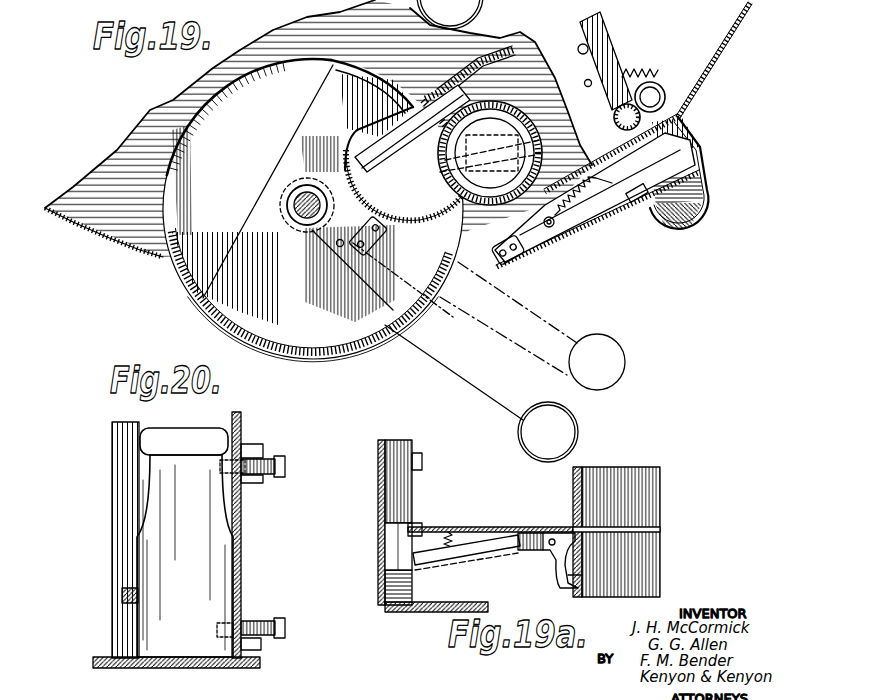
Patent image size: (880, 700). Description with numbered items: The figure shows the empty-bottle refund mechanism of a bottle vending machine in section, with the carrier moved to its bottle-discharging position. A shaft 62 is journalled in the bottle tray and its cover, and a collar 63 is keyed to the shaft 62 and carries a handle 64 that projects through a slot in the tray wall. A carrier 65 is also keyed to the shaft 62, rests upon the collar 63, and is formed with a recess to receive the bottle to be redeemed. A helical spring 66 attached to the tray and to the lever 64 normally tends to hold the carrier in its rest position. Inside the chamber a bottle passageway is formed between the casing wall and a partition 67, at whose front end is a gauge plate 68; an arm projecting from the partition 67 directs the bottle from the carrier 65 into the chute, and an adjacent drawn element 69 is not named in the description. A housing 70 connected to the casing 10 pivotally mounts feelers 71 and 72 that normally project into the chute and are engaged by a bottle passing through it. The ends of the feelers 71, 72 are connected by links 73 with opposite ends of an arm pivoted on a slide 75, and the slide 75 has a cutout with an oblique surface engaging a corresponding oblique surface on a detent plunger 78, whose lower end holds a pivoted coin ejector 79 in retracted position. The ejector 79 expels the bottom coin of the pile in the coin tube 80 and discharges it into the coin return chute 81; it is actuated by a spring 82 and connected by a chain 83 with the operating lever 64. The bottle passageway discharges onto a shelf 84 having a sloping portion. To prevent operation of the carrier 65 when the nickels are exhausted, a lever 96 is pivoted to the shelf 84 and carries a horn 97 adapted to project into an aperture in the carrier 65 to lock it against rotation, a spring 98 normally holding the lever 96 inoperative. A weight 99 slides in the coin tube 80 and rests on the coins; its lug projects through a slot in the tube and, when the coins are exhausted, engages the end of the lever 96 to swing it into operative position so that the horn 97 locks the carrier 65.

In FIG. 19, the casing 10 is at (737, 33).
In FIG. 19, the shaft 62 is at (285, 182).
In FIG. 19, the collar 63 is at (352, 246).
In FIG. 19, the handle 64 is at (480, 373).
In FIG. 19, the carrier 65 is at (352, 104).
In FIG. 19A, the carrier 65 is at (623, 483).
In FIG. 19, the helical spring 66 is at (287, 210).
In FIG. 19, the partition 67 is at (500, 43).
In FIG. 19, the gauge plate 68 is at (433, 100).
In FIG. 20, the gauge plate 68 is at (128, 490).
In FIG. 19, the stop bar 69 is at (393, 145).
In FIG. 20, the stop bar 69 is at (122, 590).
In FIG. 19, the housing 70 is at (570, 230).
In FIG. 19, the feeler 71 is at (530, 223).
In FIG. 20, the feeler 71 is at (262, 472).
In FIG. 20, the feeler 72 is at (258, 625).
In FIG. 19, the links 73 is at (547, 240).
In FIG. 20, the links 73 is at (285, 468).
In FIG. 19, the slide 75 is at (593, 203).
In FIG. 19, the detent plunger 78 is at (637, 196).
In FIG. 19, the coin ejector 79 is at (697, 138).
In FIG. 19A, the coin ejector 79 is at (452, 603).
In FIG. 19, the coin tube 80 is at (667, 107).
In FIG. 19A, the coin tube 80 is at (382, 500).
In FIG. 19, the coin return chute 81 is at (707, 190).
In FIG. 19, the spring 82 is at (622, 103).
In FIG. 19, the chain 83 is at (496, 149).
In FIG. 19A, the shelf 84 is at (483, 527).
In FIG. 19A, the lever 96 is at (523, 550).
In FIG. 19A, the horn 97 is at (575, 578).
In FIG. 19A, the spring 98 is at (449, 528).
In FIG. 19A, the weight 99 is at (400, 548).